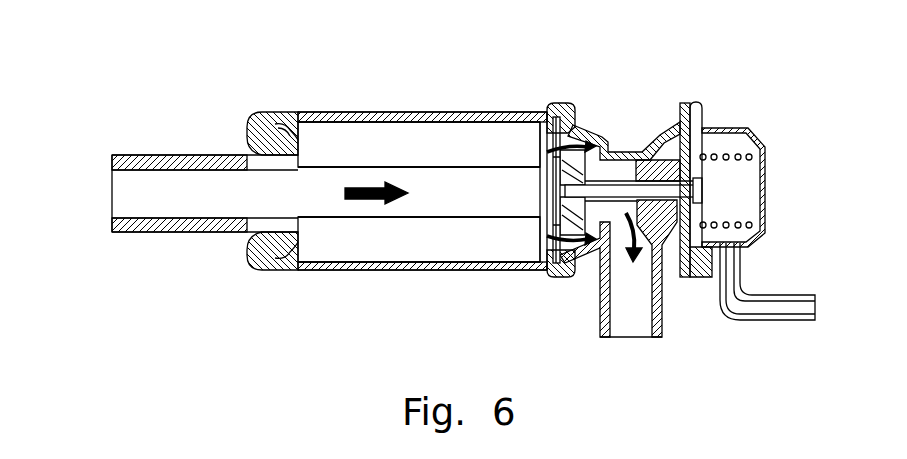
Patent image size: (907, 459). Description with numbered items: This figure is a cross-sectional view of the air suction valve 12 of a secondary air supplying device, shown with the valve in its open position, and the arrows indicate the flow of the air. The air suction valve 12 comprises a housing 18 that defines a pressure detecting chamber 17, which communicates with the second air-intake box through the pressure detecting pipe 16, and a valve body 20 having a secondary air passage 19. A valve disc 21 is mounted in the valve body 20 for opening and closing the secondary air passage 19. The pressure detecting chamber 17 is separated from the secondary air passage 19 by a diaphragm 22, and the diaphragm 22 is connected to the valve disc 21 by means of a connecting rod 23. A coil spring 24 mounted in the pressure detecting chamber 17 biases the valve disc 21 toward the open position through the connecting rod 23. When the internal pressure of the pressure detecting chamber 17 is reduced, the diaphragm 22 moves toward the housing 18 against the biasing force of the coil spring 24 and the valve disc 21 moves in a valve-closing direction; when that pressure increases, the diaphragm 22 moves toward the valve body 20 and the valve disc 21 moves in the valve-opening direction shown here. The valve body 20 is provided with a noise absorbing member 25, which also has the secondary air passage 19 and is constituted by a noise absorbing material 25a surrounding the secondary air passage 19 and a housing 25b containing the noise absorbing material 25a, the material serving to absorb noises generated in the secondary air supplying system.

The air suction valve 12 is at (710, 207).
The pressure detecting pipe 16 is at (796, 322).
The pressure detecting chamber 17 is at (722, 203).
The housing 18 is at (767, 178).
The secondary air passage 19 is at (488, 205).
The valve body 20 is at (622, 147).
The valve disc 21 is at (583, 262).
The diaphragm 22 is at (709, 255).
The connecting rod 23 is at (626, 190).
The coil spring 24 is at (726, 157).
The noise absorbing member 25 is at (329, 249).
The noise absorbing material 25a is at (363, 243).
The housing 25b is at (318, 268).